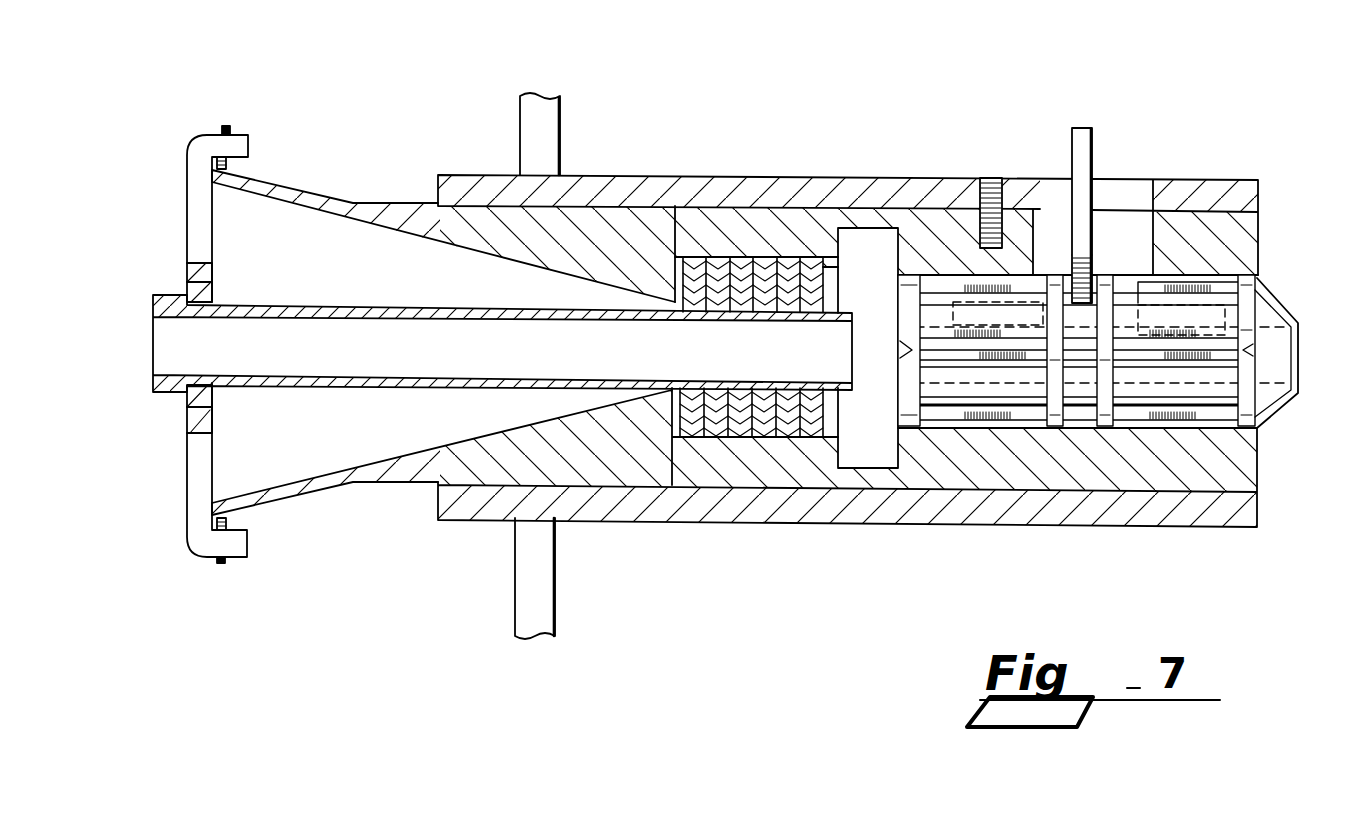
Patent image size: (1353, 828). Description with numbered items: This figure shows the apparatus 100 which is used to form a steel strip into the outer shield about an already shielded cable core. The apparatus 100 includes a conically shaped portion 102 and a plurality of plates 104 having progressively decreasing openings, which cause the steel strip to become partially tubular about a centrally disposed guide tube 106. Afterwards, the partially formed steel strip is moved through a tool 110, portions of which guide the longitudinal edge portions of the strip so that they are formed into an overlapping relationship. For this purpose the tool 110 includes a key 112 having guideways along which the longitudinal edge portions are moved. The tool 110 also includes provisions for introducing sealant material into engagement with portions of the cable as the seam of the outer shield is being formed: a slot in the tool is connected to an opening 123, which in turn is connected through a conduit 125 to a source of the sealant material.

The apparatus 100 is at (735, 548).
The conically shaped portion 102 is at (296, 183).
The plates 104 is at (768, 266).
The guide tube 106 is at (388, 387).
The tool 110 is at (952, 403).
The key 112 is at (1197, 273).
The opening 123 is at (1097, 277).
The conduit 125 is at (1086, 142).